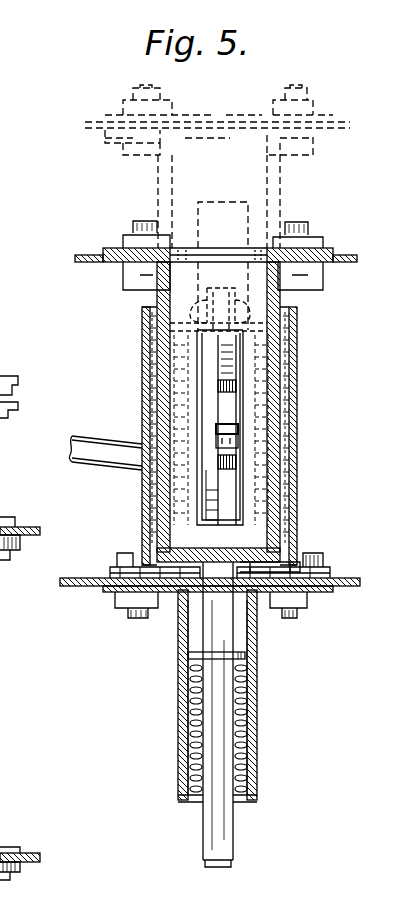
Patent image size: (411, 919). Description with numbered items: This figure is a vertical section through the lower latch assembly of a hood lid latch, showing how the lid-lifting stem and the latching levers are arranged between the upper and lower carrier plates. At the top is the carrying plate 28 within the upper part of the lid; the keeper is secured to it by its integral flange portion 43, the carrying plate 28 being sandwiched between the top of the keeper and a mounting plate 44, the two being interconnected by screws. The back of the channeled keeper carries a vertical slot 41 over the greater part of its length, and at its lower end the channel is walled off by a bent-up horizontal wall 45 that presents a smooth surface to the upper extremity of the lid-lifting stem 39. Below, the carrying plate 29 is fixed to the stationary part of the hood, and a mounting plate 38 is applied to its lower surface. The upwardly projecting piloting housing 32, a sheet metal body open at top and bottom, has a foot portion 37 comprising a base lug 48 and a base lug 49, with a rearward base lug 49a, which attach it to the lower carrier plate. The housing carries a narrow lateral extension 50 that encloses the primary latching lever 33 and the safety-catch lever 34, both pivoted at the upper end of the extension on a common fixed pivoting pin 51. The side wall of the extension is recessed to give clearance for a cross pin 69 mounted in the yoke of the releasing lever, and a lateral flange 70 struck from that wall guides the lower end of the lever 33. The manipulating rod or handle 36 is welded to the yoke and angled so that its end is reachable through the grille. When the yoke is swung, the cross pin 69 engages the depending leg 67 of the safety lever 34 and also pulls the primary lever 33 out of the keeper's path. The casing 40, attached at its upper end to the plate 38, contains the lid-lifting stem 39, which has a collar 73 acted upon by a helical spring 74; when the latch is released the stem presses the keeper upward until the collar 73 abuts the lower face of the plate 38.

The carrying plate 28 is at (78, 258).
The carrying plate 29 is at (85, 581).
The piloting member or housing 32 is at (308, 343).
The primary latching lever 33 is at (210, 348).
The safety-catch lever 34 is at (228, 362).
The manipulating rod or handle portion 36 is at (88, 443).
The foot portion 37 is at (297, 566).
The mounting plate 38 is at (113, 591).
The lid-lifting stem 39 is at (215, 629).
The casing 40 is at (255, 696).
The vertical slot 41 is at (250, 502).
The integral portion 43 is at (273, 264).
The mounting plate 44 is at (237, 252).
The horizontal wall 45 is at (259, 580).
The base lug 48 is at (10, 850).
The base lug 49 is at (118, 573).
The rearward base lug 49a is at (302, 576).
The lateral extension 50 is at (238, 386).
The common pivoting pin 51 is at (258, 306).
The depending leg 67 is at (255, 441).
The cross pin 69 is at (245, 428).
The lateral flange 70 is at (245, 462).
The collar 73 is at (192, 657).
The helical spring 74 is at (195, 712).